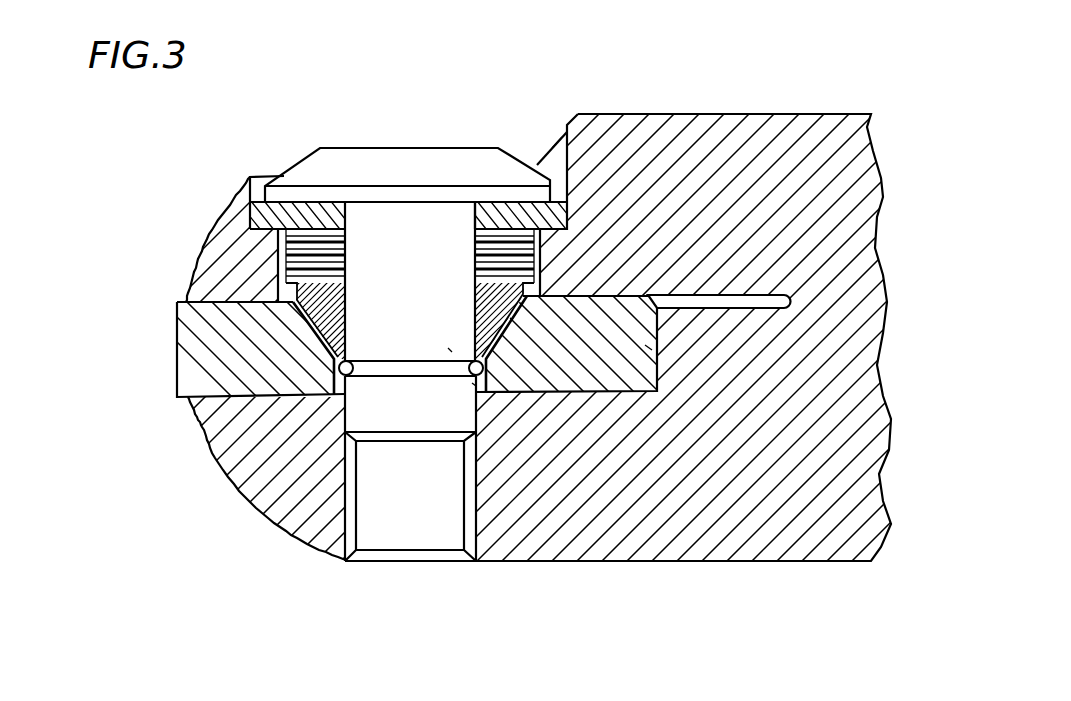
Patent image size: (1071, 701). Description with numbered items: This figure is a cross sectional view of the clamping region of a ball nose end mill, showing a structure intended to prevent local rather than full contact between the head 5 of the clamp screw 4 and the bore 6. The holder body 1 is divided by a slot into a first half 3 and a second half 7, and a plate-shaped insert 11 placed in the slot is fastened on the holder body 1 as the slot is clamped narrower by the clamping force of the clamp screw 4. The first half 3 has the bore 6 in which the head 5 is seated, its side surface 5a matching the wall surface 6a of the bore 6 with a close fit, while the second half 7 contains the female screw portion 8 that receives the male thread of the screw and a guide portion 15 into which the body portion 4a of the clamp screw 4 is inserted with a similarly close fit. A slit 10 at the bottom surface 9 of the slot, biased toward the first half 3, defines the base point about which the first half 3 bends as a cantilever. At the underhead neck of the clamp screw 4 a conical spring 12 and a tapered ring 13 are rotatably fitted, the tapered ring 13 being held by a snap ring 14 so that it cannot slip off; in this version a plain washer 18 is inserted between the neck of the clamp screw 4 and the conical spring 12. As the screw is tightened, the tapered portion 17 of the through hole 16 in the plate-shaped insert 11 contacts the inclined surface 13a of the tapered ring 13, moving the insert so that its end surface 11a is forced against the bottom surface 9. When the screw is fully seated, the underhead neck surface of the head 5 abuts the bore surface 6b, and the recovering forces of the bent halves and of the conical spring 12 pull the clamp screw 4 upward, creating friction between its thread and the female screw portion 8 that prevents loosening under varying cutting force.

The holder body 1 is at (731, 542).
The first half 3 is at (222, 247).
The clamp screw 4 is at (377, 533).
The body portion 4a is at (343, 390).
The head 5 is at (402, 165).
The side surface 5a is at (333, 190).
The bore 6 is at (536, 166).
The wall surface 6a is at (550, 168).
The bore surface 6b is at (578, 162).
The second half 7 is at (210, 418).
The female screw portion 8 is at (476, 500).
The bottom surface 9 is at (650, 347).
The slit 10 is at (752, 294).
The plate-shaped insert 11 is at (198, 370).
The end surface 11a is at (660, 335).
The conical spring 12 is at (500, 247).
The tapered ring 13 is at (330, 305).
The inclined surface 13a is at (297, 306).
The snap ring 14 is at (333, 376).
The guide portion 15 is at (472, 422).
The through hole 16 is at (474, 385).
The tapered portion 17 is at (450, 350).
The plain washer 18 is at (286, 172).